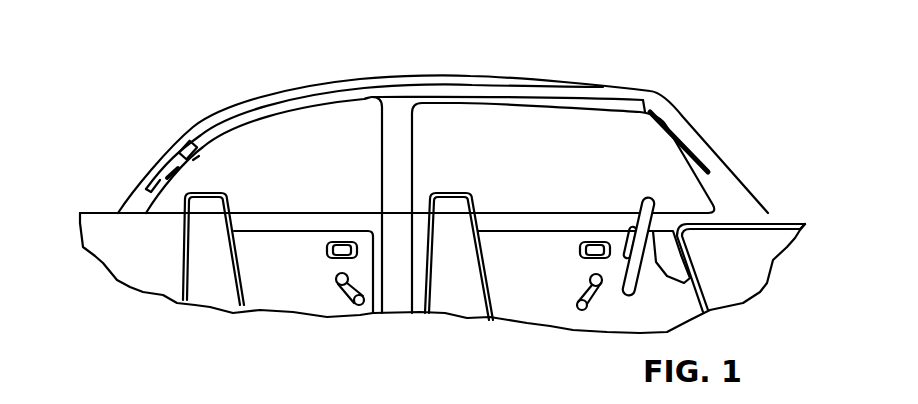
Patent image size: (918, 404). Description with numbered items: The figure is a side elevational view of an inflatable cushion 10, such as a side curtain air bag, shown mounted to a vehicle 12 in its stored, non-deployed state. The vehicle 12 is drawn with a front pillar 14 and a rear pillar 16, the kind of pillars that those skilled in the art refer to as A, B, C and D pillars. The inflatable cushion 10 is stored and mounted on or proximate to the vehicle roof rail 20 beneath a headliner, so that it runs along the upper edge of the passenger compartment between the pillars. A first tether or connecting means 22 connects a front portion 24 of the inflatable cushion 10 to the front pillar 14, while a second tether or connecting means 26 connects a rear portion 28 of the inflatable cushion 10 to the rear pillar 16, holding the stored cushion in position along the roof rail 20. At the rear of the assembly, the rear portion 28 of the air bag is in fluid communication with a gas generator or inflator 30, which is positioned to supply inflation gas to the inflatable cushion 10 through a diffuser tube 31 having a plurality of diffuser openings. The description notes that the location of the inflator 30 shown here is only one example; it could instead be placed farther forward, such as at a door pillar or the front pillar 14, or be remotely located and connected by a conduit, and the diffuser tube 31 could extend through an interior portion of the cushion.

The inflatable cushion 10 is at (368, 82).
The vehicle 12 is at (787, 224).
The front pillar 14 is at (713, 173).
The rear pillar 16 is at (143, 187).
The vehicle roof rail 20 is at (569, 82).
The first tether 22 is at (677, 133).
The front portion 24 is at (607, 100).
The second tether 26 is at (197, 158).
The rear portion 28 is at (223, 123).
The inflator 30 is at (177, 147).
The diffuser tube 31 is at (203, 157).